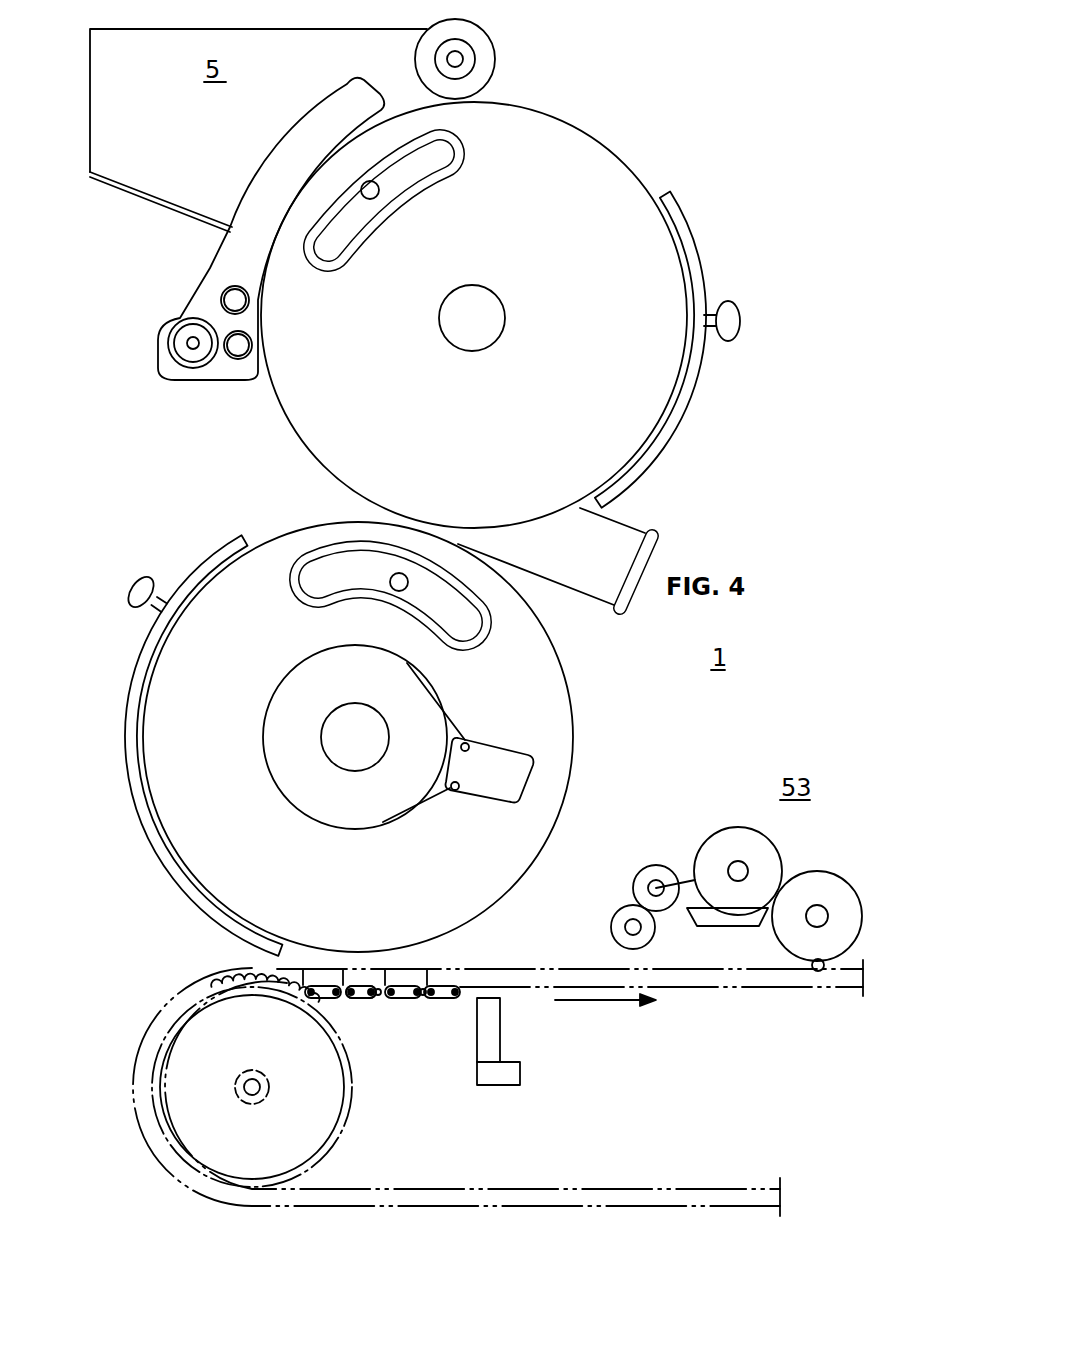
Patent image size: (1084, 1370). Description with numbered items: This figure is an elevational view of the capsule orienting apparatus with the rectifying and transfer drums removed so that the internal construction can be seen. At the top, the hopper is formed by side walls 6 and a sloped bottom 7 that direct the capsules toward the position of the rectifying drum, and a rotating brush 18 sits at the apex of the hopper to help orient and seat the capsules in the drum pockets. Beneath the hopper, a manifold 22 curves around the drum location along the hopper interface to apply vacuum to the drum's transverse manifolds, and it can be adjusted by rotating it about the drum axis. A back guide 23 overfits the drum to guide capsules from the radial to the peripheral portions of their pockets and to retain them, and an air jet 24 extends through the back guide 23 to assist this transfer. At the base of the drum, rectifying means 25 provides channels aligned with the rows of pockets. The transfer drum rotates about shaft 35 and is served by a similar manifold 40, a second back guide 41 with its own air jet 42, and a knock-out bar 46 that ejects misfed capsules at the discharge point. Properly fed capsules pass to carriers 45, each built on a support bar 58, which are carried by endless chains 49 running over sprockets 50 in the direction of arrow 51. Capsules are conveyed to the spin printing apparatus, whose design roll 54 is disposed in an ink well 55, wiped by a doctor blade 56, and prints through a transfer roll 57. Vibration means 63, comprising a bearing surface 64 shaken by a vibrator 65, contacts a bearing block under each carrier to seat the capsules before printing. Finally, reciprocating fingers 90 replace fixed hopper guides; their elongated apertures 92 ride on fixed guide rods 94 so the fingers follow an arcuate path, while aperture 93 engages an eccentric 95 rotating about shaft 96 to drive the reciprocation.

The side walls 6 is at (218, 42).
The sloped bottom 7 is at (168, 207).
The rotating brush 18 is at (497, 57).
The manifold 22 is at (348, 232).
The back guide 23 is at (700, 290).
The air jet 24 is at (734, 326).
The rectifying means 25 is at (618, 530).
The shaft 35 is at (350, 755).
The manifold 40 is at (326, 584).
The back guide 41 is at (148, 648).
The air jet 42 is at (150, 588).
The carriers 45 is at (362, 986).
The knock-out bar 46 is at (487, 796).
The endless chains 49 is at (533, 980).
The sprockets 50 is at (322, 1096).
The arrow 51 is at (612, 1010).
The design roll 54 is at (738, 838).
The ink well 55 is at (733, 928).
The doctor blade 56 is at (680, 880).
The transfer roll 57 is at (813, 876).
The support bar 58 is at (406, 974).
The vibration means 63 is at (486, 1086).
The bearing surface 64 is at (490, 998).
The vibrator 65 is at (520, 1072).
The reciprocating fingers 90 is at (332, 117).
The elongated apertures 92 is at (246, 289).
The aperture 93 is at (170, 360).
The guide rods 94 is at (228, 296).
The eccentric 95 is at (192, 360).
The shaft 96 is at (188, 343).